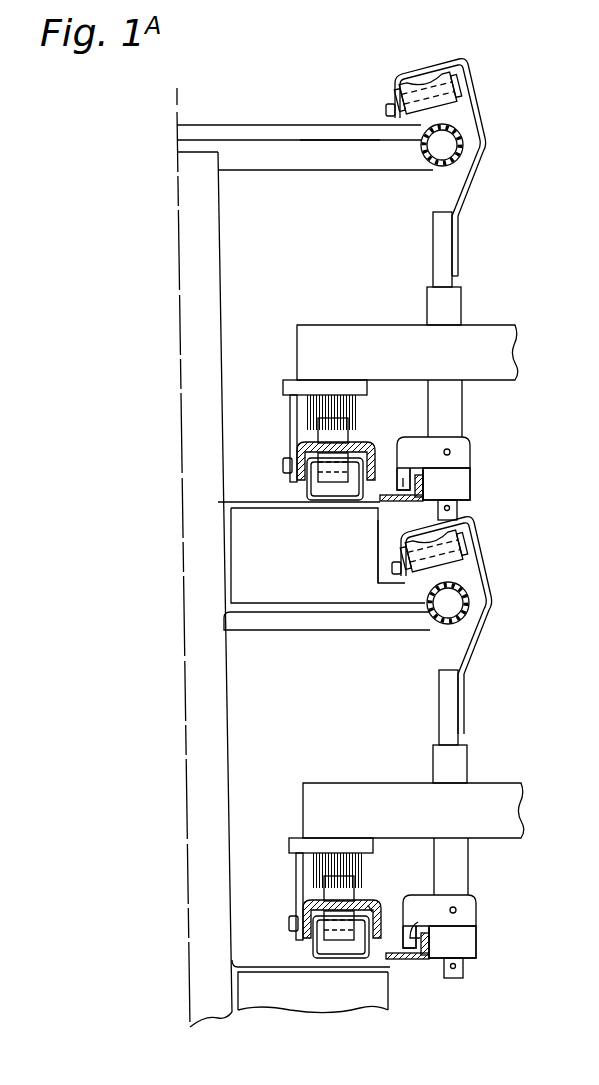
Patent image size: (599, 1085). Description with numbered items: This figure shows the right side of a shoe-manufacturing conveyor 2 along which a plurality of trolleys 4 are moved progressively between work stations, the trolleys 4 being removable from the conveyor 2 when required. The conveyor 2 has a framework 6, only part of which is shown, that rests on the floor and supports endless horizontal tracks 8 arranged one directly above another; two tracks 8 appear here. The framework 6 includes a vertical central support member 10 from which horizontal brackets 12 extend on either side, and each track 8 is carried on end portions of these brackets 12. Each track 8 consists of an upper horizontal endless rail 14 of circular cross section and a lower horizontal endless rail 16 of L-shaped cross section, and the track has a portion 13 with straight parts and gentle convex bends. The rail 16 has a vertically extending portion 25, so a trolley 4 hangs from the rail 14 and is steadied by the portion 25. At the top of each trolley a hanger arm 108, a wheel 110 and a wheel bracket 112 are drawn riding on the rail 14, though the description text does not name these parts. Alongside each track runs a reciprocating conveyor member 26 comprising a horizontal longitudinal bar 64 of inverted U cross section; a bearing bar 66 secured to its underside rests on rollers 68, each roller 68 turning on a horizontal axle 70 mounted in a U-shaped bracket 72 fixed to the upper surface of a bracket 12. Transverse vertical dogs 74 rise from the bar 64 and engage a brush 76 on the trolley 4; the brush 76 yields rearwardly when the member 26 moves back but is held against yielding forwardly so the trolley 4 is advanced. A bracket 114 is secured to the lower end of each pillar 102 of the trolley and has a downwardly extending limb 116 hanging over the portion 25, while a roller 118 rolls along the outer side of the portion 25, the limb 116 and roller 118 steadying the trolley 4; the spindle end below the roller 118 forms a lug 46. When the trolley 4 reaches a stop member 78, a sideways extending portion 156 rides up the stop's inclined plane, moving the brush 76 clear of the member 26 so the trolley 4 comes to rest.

The conveyor 2 is at (344, 76).
The trolley 4 is at (388, 366).
The framework 6 is at (228, 822).
The track 8 is at (490, 427).
The vertical central support member 10 is at (215, 327).
The horizontal bracket 12 is at (280, 125).
The track portion 13 is at (489, 229).
The upper horizontal endless rail 14 is at (464, 152).
The lower horizontal endless rail 16 is at (416, 498).
The vertically extending portion 25 is at (424, 480).
The conveyor member 26 is at (300, 456).
The lug 46 is at (458, 511).
The horizontal longitudinal bar 64 is at (305, 915).
The bearing bar 66 is at (361, 448).
The roller 68 is at (330, 486).
The horizontal axle 70 is at (382, 458).
The U-shaped bracket 72 is at (331, 500).
The dog 74 is at (336, 659).
The brush 76 is at (345, 396).
The stop member 78 is at (290, 430).
The pillar 102 is at (462, 412).
The bracket arm 108 is at (477, 116).
The wheel 110 is at (432, 88).
The wheel bracket 112 is at (470, 72).
The bracket 114 is at (470, 451).
The downwardly extending limb 116 is at (396, 480).
The roller 118 is at (471, 486).
The sideways extending portion 156 is at (285, 382).